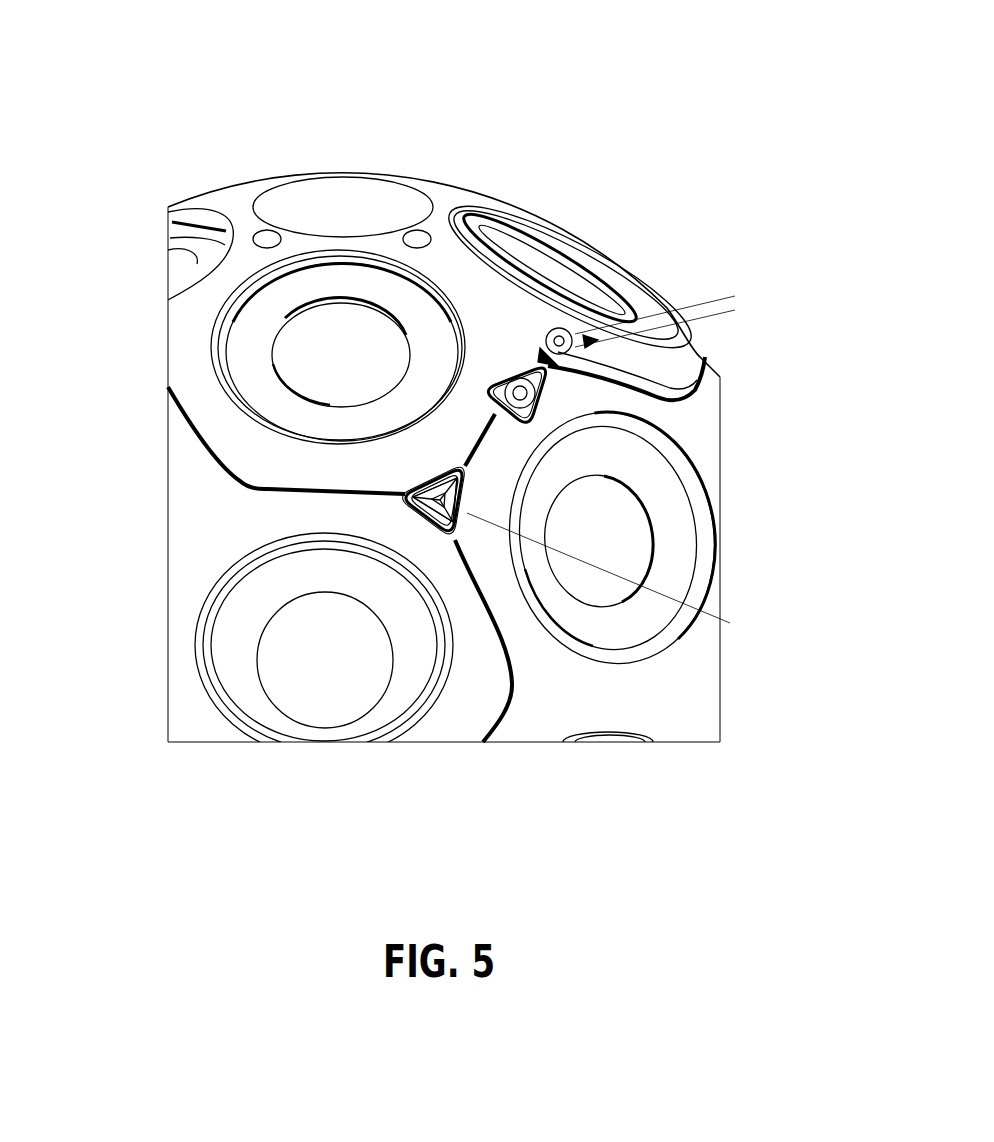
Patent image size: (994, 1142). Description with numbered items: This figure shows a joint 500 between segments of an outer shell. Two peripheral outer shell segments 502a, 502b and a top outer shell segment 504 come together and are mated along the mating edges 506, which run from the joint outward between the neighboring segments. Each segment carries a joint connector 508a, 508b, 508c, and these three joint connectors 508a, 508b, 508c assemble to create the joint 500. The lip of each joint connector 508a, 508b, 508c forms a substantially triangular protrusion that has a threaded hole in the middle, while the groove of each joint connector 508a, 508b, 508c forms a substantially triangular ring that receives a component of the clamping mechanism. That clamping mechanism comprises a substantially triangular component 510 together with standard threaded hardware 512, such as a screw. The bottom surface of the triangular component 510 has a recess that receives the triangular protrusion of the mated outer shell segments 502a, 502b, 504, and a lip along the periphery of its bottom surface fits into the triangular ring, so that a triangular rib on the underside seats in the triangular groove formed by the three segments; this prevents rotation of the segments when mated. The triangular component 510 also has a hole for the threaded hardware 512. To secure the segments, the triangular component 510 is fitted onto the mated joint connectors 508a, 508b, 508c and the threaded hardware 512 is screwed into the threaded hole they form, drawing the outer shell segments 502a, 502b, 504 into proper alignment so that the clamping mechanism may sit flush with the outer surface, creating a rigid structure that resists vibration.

The joint 500 is at (430, 458).
The peripheral outer shell segment 502a is at (183, 685).
The peripheral outer shell segment 502b is at (675, 682).
The top outer shell segment 504 is at (395, 183).
The mating edge 506 is at (510, 683).
The joint connector 508a is at (408, 485).
The joint connector 508b is at (430, 527).
The joint connector 508c is at (462, 497).
The triangular component 510 is at (545, 392).
The threaded hardware 512 is at (566, 329).